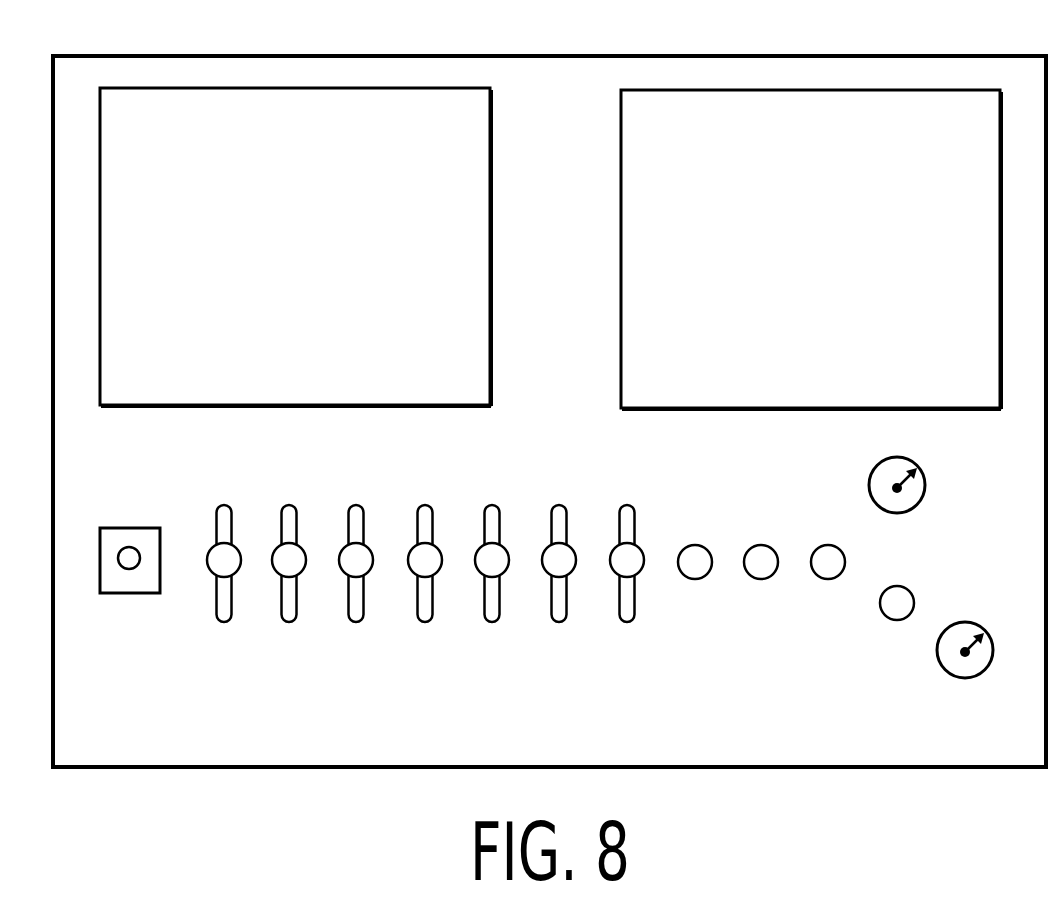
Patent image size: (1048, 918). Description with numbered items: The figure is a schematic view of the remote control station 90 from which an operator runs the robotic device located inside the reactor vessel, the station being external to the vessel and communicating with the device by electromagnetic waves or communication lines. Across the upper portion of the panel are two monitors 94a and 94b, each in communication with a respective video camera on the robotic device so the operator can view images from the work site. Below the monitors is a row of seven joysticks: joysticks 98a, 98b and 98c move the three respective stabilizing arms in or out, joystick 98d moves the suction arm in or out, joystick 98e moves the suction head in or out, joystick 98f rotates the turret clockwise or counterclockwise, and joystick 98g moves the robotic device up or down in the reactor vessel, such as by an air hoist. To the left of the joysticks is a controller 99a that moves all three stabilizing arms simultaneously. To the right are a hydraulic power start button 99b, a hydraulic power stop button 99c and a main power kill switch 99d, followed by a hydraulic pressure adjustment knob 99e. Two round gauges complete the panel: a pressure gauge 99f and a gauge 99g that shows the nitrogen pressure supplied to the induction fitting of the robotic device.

The remote control station 90 is at (221, 794).
The monitor 94a is at (312, 256).
The monitor 94b is at (822, 258).
The joystick 98a is at (218, 570).
The joystick 98b is at (284, 570).
The joystick 98c is at (348, 567).
The joystick 98d is at (420, 567).
The joystick 98e is at (480, 567).
The joystick 98f is at (563, 570).
The joystick 98g is at (632, 570).
The controller 99a is at (127, 571).
The hydraulic power start button 99b is at (690, 574).
The hydraulic power stop button 99c is at (762, 574).
The main power kill switch 99d is at (827, 574).
The hydraulic pressure adjustment knob 99e is at (893, 619).
The pressure gauge 99f is at (920, 485).
The gauge 99g is at (957, 670).